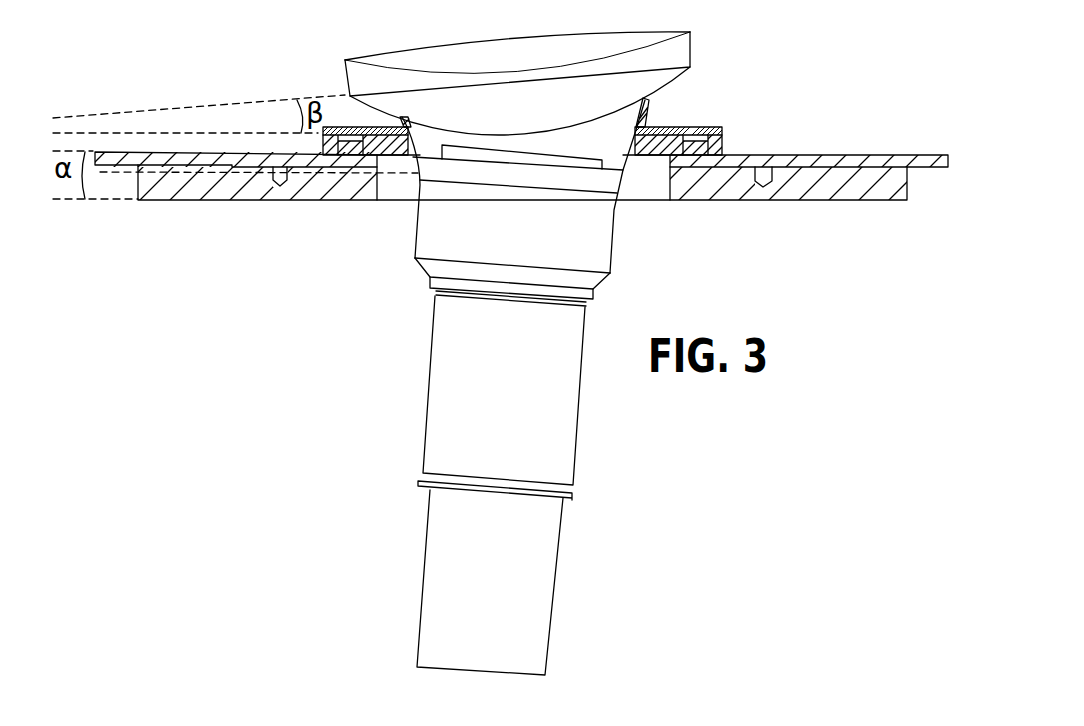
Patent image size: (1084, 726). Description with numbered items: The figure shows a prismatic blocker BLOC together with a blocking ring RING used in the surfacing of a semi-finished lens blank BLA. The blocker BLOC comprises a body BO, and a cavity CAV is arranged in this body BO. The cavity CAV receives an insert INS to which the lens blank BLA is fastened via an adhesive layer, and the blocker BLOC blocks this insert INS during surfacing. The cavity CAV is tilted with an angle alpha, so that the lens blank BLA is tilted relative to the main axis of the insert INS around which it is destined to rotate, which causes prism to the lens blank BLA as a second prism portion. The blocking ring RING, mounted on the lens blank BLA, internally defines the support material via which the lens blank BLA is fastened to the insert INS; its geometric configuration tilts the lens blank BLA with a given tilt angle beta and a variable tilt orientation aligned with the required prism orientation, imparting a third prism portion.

The lens blank BLA is at (690, 48).
The blocking ring RING is at (646, 116).
The body BO is at (376, 188).
The insert INS is at (508, 157).
The cavity CAV is at (602, 135).
The prismatic blocker BLOC is at (830, 215).